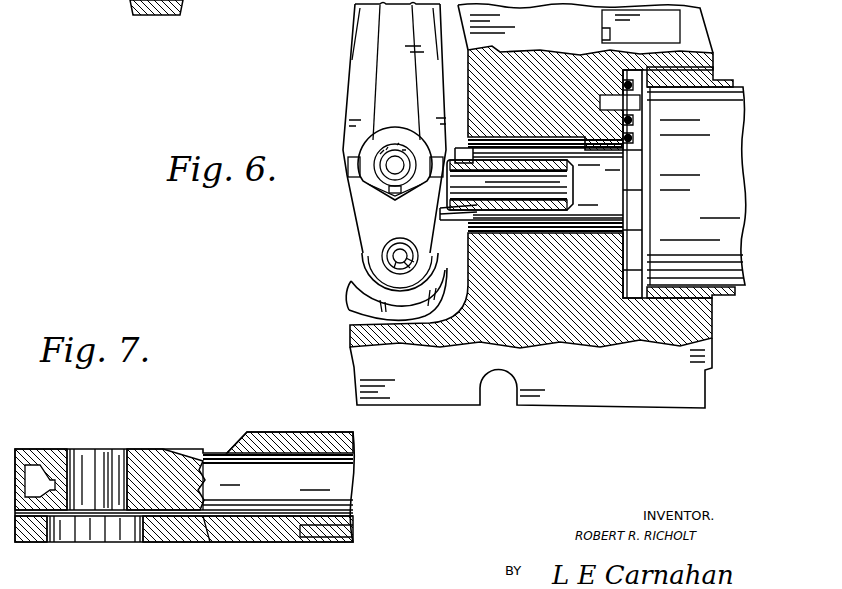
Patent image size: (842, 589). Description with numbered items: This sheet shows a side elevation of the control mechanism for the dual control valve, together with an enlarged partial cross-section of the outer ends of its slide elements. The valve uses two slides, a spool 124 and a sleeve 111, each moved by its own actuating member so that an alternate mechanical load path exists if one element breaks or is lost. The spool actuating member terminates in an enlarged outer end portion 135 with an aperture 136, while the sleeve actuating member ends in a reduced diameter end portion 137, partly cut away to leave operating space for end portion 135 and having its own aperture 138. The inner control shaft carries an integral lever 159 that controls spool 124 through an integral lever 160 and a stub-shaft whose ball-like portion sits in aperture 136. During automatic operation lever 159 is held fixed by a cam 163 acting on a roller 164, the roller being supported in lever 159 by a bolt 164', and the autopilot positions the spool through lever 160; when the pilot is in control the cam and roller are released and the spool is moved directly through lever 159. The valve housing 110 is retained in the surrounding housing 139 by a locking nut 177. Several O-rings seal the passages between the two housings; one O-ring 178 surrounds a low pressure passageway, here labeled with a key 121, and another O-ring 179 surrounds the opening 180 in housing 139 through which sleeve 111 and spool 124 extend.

In FIG. 6, the valve housing 110 is at (714, 215).
In FIG. 6, the sleeve 111 is at (603, 194).
In FIG. 7, the sleeve 111 is at (262, 537).
In FIG. 6, the key 121 is at (620, 102).
In FIG. 6, the valve spool 124 is at (483, 192).
In FIG. 7, the valve spool 124 is at (292, 497).
In FIG. 7, the enlarged outer end portion 135 is at (140, 462).
In FIG. 7, the aperture 136 is at (118, 460).
In FIG. 7, the reduced diameter end portion 137 is at (210, 543).
In FIG. 7, the aperture 138 is at (139, 533).
In FIG. 6, the housing 139 is at (642, 384).
In FIG. 6, the lever 159 is at (350, 82).
In FIG. 6, the lever 160 is at (408, 82).
In FIG. 6, the cam 163 is at (350, 300).
In FIG. 6, the roller 164 is at (365, 264).
In FIG. 6, the bolt 164' is at (357, 243).
In FIG. 6, the locking nut 177 is at (723, 296).
In FIG. 6, the O-ring 178 is at (633, 88).
In FIG. 6, the O-ring 179 is at (640, 133).
In FIG. 6, the opening 180 is at (613, 148).